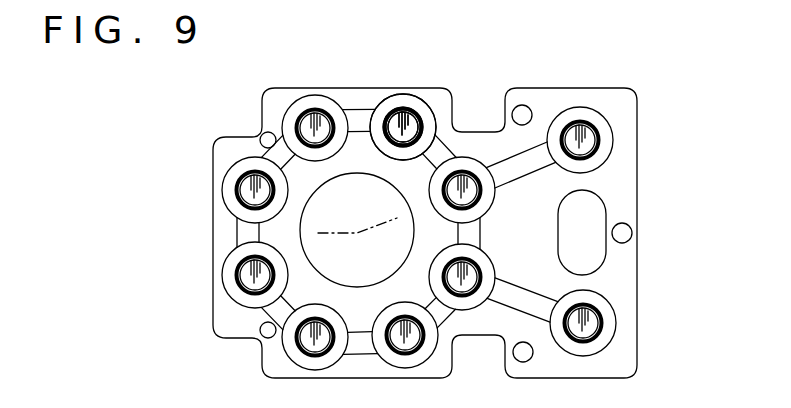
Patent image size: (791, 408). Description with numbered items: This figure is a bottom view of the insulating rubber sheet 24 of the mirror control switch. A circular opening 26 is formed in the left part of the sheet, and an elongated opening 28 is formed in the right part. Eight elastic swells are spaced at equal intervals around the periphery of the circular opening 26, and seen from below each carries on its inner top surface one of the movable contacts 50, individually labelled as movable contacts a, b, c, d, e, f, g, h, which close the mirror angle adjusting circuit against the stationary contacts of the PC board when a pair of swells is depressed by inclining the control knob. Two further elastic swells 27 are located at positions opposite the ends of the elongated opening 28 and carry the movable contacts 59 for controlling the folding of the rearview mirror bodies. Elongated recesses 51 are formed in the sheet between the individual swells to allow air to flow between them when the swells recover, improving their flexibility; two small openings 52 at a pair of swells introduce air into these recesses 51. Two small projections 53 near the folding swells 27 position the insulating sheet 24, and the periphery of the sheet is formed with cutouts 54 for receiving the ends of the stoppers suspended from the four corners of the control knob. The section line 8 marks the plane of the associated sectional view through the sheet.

The insulating sheet 24 is at (612, 86).
The circular opening 26 is at (337, 217).
The elastic swells 27 is at (619, 316).
The elongated opening 28 is at (569, 245).
The movable contacts 50 is at (413, 124).
The elongated recesses 51 is at (360, 117).
The small openings 52 is at (259, 131).
The small projections 53 is at (523, 104).
The cutouts 54 is at (254, 137).
The movable contacts 59 is at (597, 150).
The section line 8 is at (205, 233).
The movable contact a is at (318, 355).
The movable contact b is at (314, 96).
The movable contact c is at (470, 158).
The movable contact d is at (242, 192).
The movable contact e is at (407, 357).
The movable contact f is at (407, 95).
The movable contact g is at (472, 297).
The movable contact h is at (240, 281).